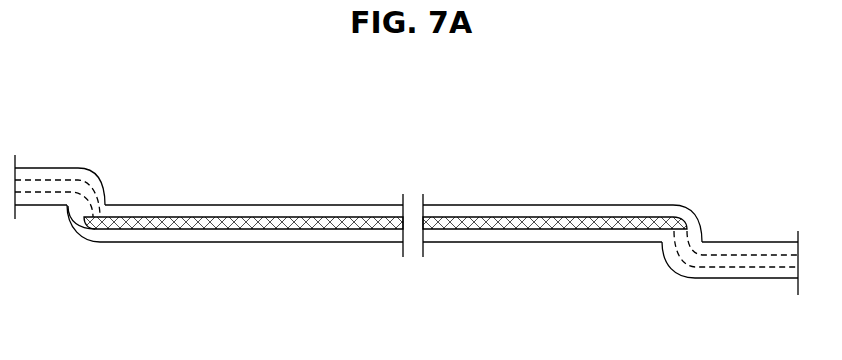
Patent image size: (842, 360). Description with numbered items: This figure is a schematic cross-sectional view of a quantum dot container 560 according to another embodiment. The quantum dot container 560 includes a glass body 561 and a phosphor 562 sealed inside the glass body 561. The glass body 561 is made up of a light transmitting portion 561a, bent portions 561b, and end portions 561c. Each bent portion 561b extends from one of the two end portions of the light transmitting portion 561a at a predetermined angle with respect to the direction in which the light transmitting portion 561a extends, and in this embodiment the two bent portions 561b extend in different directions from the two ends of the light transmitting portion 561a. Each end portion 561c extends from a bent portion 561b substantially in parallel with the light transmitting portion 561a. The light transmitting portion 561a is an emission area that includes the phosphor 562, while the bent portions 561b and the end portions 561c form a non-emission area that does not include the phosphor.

The quantum dot container 560 is at (132, 86).
The glass body 561 is at (502, 210).
The light transmitting portion 561a is at (370, 196).
The bent portion 561b is at (112, 168).
The end portion 561c is at (35, 231).
The phosphor 562 is at (578, 225).